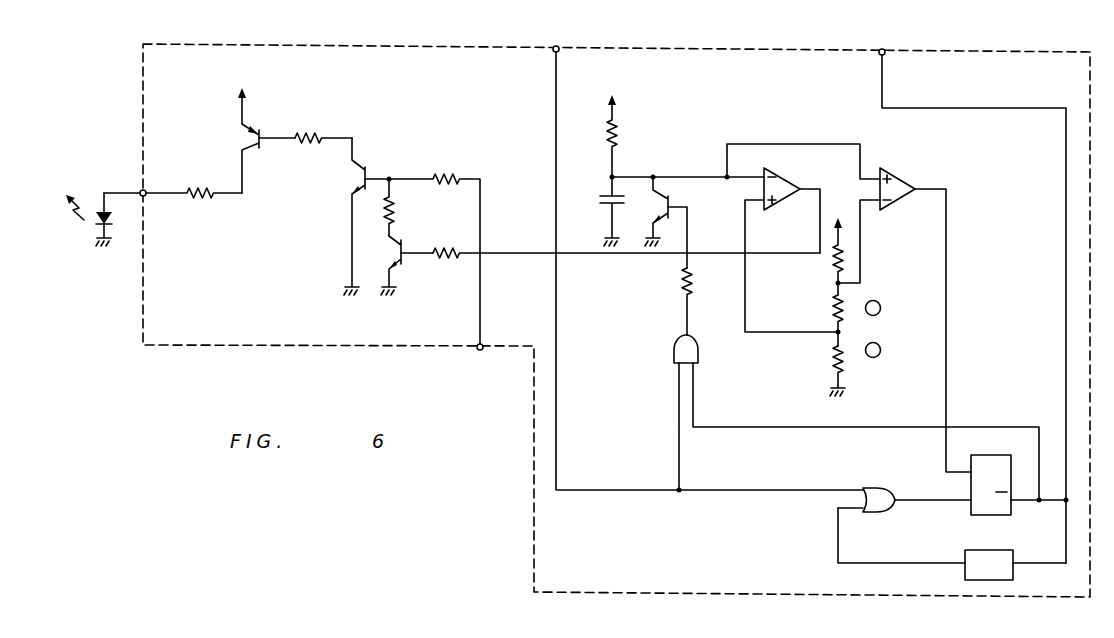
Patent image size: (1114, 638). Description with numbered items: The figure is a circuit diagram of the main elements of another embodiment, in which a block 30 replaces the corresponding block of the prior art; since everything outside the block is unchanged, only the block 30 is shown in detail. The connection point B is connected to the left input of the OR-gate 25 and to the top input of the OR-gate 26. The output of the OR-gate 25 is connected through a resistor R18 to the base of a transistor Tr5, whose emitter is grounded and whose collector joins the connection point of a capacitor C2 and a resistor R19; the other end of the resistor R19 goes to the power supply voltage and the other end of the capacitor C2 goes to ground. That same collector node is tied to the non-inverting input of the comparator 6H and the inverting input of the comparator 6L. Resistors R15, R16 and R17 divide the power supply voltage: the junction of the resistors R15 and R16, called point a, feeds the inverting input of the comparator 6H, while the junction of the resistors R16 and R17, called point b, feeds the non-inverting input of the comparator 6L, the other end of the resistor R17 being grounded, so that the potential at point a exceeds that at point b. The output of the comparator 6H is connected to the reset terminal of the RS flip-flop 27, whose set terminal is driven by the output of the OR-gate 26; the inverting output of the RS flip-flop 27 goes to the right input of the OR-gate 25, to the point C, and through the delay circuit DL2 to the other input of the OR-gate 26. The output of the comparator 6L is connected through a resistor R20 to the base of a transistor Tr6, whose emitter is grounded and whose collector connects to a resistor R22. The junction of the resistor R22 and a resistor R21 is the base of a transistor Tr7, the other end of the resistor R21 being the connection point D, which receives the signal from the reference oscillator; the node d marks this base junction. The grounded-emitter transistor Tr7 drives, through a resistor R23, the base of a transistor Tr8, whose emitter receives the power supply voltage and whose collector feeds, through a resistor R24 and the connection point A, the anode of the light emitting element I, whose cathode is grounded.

The block 30 is at (725, 48).
The OR-gate 25 is at (674, 358).
The OR-gate 26 is at (882, 488).
The RS flip-flop 27 is at (995, 456).
The comparator 6L is at (790, 182).
The comparator 6H is at (905, 182).
The delay circuit DL2 is at (980, 550).
The resistor R15 is at (841, 247).
The resistor R16 is at (821, 320).
The resistor R17 is at (822, 371).
The resistor R18 is at (669, 300).
The resistor R19 is at (669, 137).
The resistor R20 is at (626, 243).
The resistor R21 is at (434, 249).
The resistor R22 is at (408, 207).
The resistor R23 is at (322, 127).
The resistor R24 is at (194, 182).
The capacitor C2 is at (601, 211).
The transistor Tr5 is at (656, 222).
The transistor Tr6 is at (395, 265).
The transistor Tr7 is at (354, 216).
The transistor Tr8 is at (251, 140).
The connection point A is at (135, 183).
The connection point B is at (705, 257).
The point C is at (972, 294).
The connection point D is at (479, 358).
The light emitting element I is at (103, 219).
The point a is at (865, 306).
The point b is at (865, 348).
The node d' d is at (389, 176).